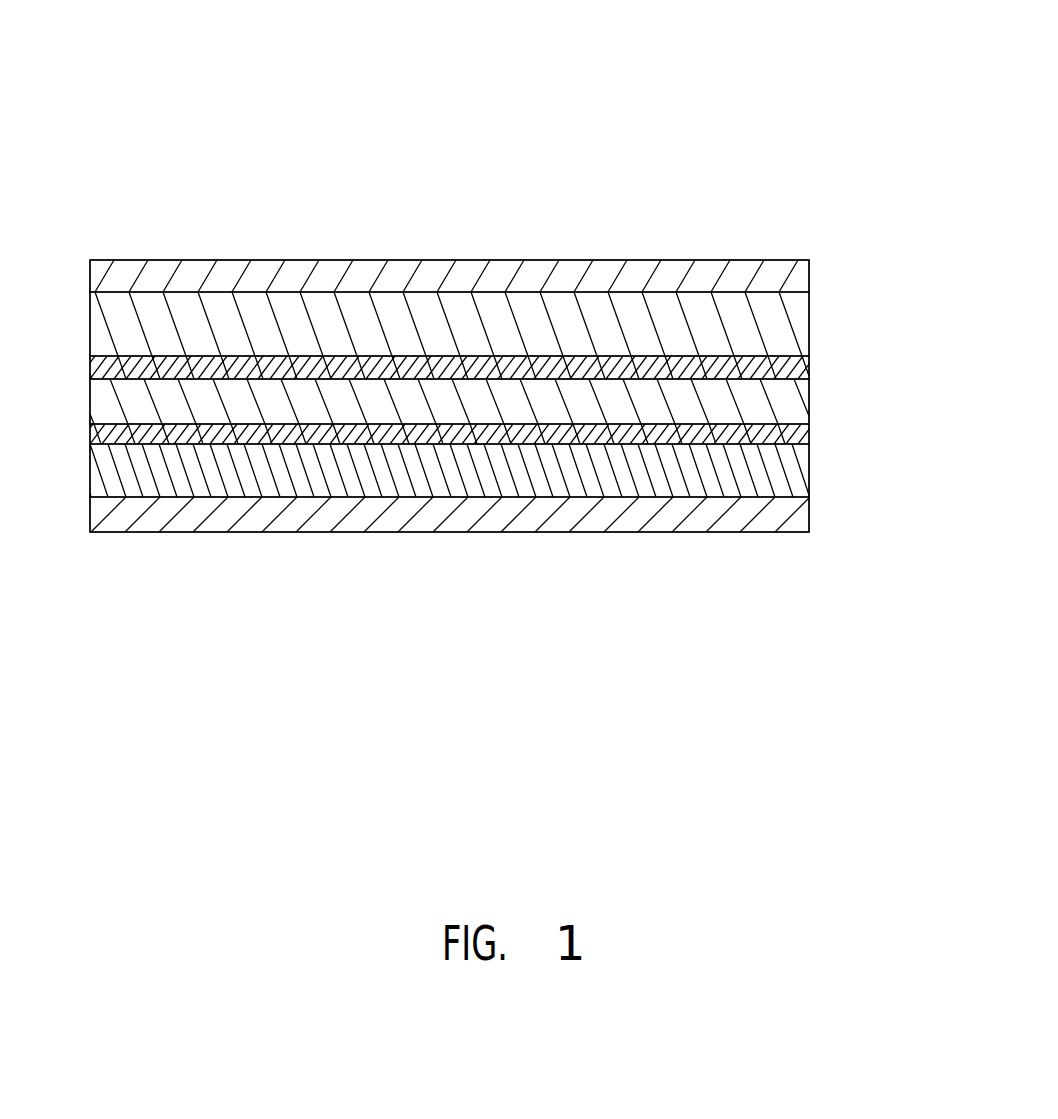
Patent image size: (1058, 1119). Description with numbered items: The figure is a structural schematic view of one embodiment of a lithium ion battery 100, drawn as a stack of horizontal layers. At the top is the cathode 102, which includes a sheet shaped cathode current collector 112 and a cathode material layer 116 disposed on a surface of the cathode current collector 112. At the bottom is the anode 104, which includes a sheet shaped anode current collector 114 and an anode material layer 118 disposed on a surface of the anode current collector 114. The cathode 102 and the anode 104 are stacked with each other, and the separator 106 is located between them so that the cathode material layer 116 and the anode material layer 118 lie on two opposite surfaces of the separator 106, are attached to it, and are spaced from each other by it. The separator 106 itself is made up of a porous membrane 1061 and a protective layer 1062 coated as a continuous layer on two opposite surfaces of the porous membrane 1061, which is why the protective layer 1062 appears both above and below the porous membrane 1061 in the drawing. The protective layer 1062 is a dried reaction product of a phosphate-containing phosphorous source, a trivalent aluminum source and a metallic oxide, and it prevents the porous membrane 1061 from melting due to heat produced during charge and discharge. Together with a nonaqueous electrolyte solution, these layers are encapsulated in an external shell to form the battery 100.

The lithium ion battery 100 is at (511, 128).
The cathode 102 is at (873, 215).
The cathode current collector 112 is at (782, 273).
The cathode material layer 116 is at (787, 318).
The separator 106 is at (888, 350).
The protective layer 1062 is at (797, 374).
The porous membrane 1061 is at (797, 411).
The anode 104 is at (878, 462).
The anode material layer 118 is at (798, 481).
The anode current collector 114 is at (797, 512).